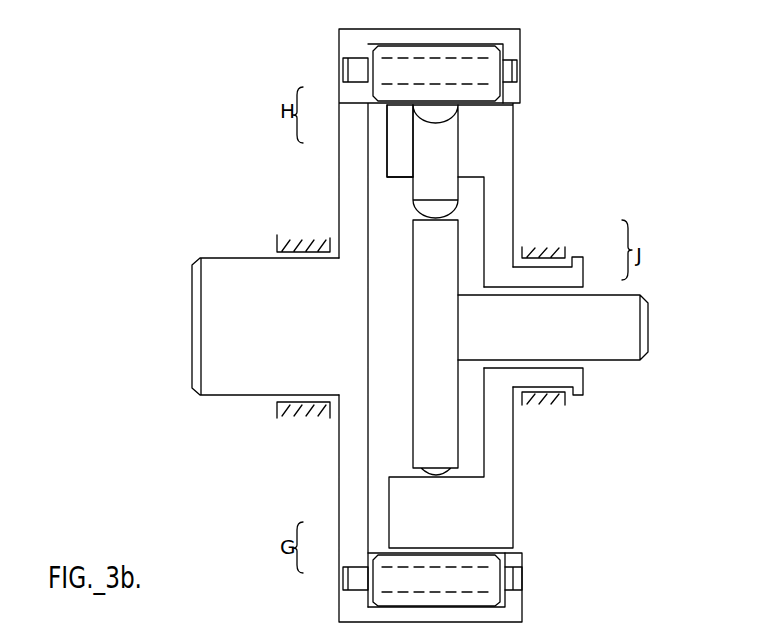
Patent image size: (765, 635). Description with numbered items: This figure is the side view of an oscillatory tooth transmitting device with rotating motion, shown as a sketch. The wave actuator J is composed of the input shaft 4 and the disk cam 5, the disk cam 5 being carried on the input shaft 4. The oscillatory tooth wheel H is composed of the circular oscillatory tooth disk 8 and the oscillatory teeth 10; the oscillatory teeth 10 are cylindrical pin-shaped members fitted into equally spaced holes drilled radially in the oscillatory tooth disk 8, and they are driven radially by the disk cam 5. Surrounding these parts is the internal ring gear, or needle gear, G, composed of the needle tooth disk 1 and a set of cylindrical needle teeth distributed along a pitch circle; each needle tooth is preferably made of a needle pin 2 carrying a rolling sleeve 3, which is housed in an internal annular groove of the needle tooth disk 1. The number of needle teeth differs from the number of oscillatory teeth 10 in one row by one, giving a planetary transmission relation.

The needle tooth disk 1 is at (355, 602).
The needle pins 2 is at (355, 577).
The rolling sleeves 3 is at (402, 575).
The input shaft 4 is at (577, 313).
The disk cam 5 is at (442, 248).
The oscillatory tooth disk 8 is at (397, 117).
The oscillatory teeth 10 is at (425, 168).